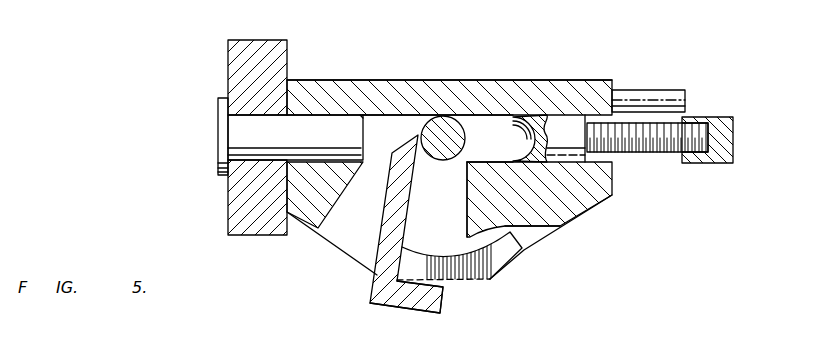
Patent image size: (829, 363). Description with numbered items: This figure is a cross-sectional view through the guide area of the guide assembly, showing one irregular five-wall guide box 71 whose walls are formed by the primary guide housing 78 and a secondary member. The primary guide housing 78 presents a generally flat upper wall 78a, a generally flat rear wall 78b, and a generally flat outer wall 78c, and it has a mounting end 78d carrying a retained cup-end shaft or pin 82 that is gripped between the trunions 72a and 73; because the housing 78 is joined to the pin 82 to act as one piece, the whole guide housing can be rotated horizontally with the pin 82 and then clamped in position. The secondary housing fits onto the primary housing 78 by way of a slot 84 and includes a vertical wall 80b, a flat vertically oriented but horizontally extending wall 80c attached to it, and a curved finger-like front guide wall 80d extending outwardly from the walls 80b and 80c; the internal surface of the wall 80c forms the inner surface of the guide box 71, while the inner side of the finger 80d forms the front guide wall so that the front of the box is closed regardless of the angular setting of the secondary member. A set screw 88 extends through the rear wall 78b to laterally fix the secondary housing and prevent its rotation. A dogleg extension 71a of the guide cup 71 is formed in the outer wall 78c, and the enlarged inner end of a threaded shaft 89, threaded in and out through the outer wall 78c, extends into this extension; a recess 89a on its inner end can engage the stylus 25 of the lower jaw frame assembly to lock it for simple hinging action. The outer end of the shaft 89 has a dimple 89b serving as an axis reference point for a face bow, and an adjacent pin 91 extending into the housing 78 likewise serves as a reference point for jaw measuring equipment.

The trunion 72a is at (232, 51).
The trunion 73 is at (236, 198).
The cup-end shaft or pin 82 is at (222, 128).
The slot 84 is at (343, 244).
The primary guide housing 78 is at (449, 160).
The upper wall 78a is at (491, 127).
The rear wall 78b is at (446, 79).
The outer wall 78c is at (539, 220).
The mounting end 78d is at (308, 86).
The guide box 71 is at (428, 239).
The dogleg extension 71a is at (487, 159).
The vertical wall 80b is at (393, 301).
The horizontally extending wall 80c is at (386, 209).
The front guide wall 80d is at (459, 276).
The stylus 25 is at (420, 134).
The set screw 88 is at (563, 227).
The shaft 89 is at (692, 128).
The recess 89a is at (516, 153).
The dimple 89b is at (736, 140).
The pin 91 is at (655, 70).